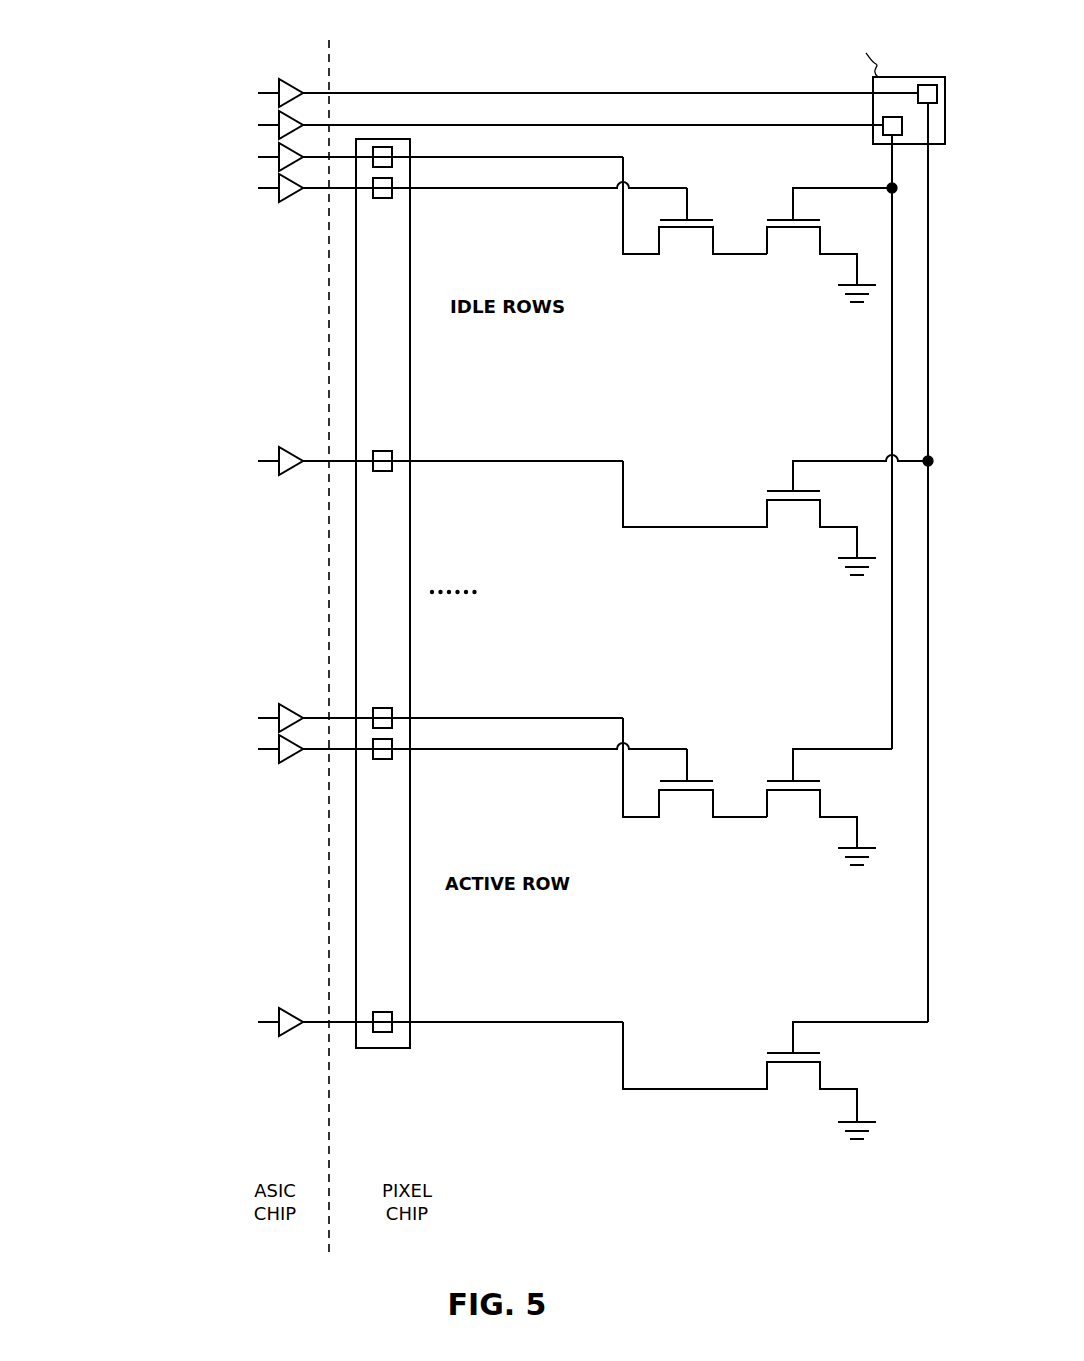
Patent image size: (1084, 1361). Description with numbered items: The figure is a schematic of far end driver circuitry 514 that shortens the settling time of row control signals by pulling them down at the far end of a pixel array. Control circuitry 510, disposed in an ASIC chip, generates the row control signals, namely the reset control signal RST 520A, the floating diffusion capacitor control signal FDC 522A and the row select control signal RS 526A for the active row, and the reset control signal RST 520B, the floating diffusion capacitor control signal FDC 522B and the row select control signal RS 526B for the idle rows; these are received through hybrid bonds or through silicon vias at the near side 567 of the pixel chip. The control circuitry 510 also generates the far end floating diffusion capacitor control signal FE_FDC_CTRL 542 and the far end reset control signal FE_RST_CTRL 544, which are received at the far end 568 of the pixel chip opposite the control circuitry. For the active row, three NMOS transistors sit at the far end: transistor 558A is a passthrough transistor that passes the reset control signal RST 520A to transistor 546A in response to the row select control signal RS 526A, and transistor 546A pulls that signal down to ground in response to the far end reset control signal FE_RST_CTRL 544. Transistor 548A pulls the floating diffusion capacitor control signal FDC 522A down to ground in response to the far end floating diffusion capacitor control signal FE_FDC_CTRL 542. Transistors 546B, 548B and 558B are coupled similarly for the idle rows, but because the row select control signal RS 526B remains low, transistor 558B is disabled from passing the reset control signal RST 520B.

The control circuitry 510 is at (202, 1131).
The far end driver circuitry 514 is at (924, 45).
The reset control signal RST 520A is at (206, 717).
The reset control signal RST 520B is at (208, 160).
The floating diffusion capacitor control signal FDC 522A is at (202, 1020).
The floating diffusion capacitor control signal FDC 522B is at (202, 462).
The row select control signal RS 526A is at (206, 749).
The row select control signal RS 526B is at (208, 192).
The far end floating diffusion capacitor control signal FE_FDC_CTRL 542 is at (108, 97).
The far end reset control signal FE_RST_CTRL 544 is at (108, 129).
The transistor 546A is at (790, 798).
The transistor 546B is at (793, 232).
The transistor 548A is at (790, 1072).
The transistor 548B is at (793, 505).
The transistor 558A is at (683, 798).
The transistor 558B is at (687, 232).
The near side of the pixel chip 567 is at (410, 1040).
The far end of the pixel chip 568 is at (873, 80).